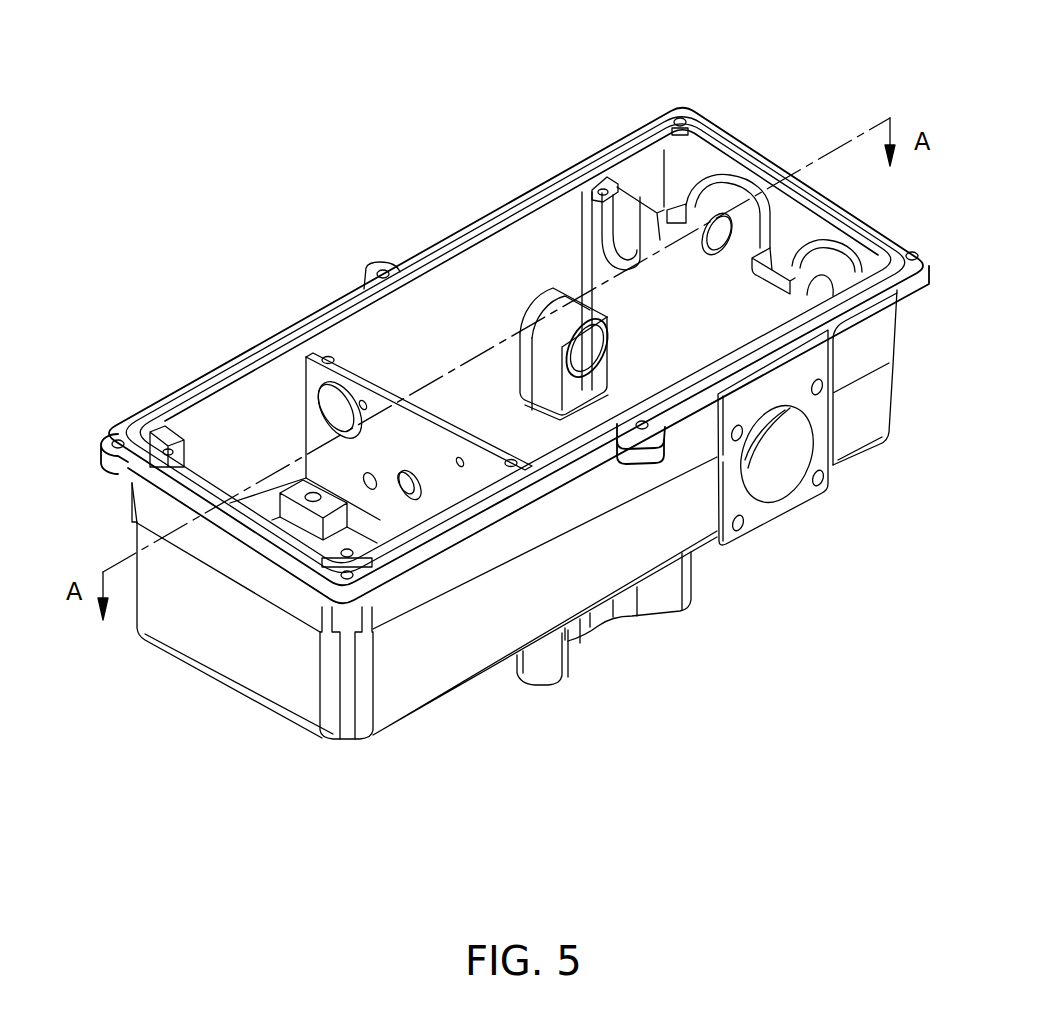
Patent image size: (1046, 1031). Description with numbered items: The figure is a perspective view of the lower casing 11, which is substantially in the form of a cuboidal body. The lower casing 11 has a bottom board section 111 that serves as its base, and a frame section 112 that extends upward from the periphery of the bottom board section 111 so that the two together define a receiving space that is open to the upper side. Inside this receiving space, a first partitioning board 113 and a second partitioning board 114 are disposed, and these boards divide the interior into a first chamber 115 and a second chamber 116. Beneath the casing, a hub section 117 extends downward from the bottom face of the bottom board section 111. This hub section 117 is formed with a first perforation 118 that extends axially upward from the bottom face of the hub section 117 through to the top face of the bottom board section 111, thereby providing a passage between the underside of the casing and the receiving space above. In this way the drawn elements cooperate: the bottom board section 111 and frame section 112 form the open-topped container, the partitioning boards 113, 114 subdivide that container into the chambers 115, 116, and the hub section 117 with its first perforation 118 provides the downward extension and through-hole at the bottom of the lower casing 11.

The lower casing 11 is at (405, 735).
The bottom board section 111 is at (528, 417).
The frame section 112 is at (222, 622).
The first partitioning board 113 is at (312, 370).
The second partitioning board 114 is at (677, 305).
The first chamber 115 is at (223, 445).
The second chamber 116 is at (505, 273).
The hub section 117 is at (603, 632).
The first perforation 118 is at (442, 365).